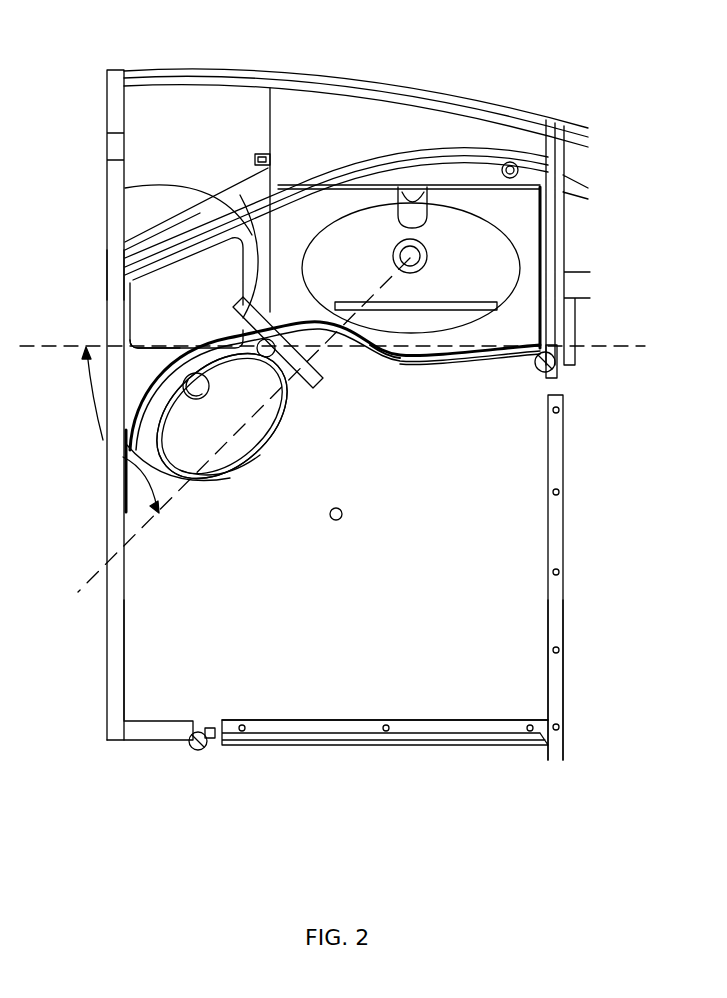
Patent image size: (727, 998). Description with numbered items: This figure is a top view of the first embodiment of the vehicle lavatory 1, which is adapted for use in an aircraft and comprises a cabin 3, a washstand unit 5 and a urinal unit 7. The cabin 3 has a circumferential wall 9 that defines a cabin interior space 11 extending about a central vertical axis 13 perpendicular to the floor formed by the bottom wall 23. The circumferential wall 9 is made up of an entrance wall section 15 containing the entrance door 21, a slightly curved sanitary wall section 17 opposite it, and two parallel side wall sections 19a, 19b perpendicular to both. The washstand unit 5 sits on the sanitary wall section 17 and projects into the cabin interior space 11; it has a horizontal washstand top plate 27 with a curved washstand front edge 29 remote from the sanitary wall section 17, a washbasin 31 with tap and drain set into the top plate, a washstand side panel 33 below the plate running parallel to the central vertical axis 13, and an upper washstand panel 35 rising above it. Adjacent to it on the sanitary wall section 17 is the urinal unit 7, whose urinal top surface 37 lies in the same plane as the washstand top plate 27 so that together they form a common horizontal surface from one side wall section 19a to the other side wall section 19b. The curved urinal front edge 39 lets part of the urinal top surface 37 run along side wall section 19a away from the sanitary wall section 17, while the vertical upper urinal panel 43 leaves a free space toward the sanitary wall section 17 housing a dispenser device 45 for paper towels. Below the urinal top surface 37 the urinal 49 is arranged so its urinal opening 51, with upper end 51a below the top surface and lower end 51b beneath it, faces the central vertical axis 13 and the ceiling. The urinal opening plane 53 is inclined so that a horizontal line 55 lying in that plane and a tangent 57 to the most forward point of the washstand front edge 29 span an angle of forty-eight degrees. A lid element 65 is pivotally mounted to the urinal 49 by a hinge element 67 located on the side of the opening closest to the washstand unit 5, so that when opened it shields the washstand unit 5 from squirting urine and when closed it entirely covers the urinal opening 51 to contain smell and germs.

The vehicle lavatory 1 is at (36, 8).
The cabin 3 is at (558, 676).
The washstand unit 5 is at (480, 352).
The urinal unit 7 is at (241, 463).
The circumferential wall 9 is at (115, 698).
The cabin interior space 11 is at (432, 570).
The central vertical axis 13 is at (343, 512).
The entrance wall section 15 is at (157, 740).
The sanitary wall section 17 is at (308, 72).
The side wall section 19a is at (124, 271).
The side wall section 19b is at (560, 428).
The entrance door 21 is at (438, 730).
The bottom wall 23 is at (292, 680).
The washstand top plate 27 is at (528, 320).
The washstand front edge 29 is at (403, 357).
The washbasin 31 is at (480, 245).
The washstand side panel 33 is at (432, 358).
The upper washstand panel 35 is at (368, 155).
The urinal top surface 37 is at (150, 300).
The urinal front edge 39 is at (175, 331).
The upper urinal panel 43 is at (195, 237).
The dispenser device 45 is at (157, 137).
The urinal 49 is at (257, 463).
The urinal opening 51 is at (260, 420).
The upper end of the urinal opening 51a is at (240, 195).
The lower end of the urinal opening 51b is at (263, 447).
The urinal opening plane 53 is at (252, 416).
The horizontal line 55 is at (98, 575).
The tangent 57 is at (47, 350).
The lid element 65 is at (325, 372).
The hinge element 67 is at (280, 383).